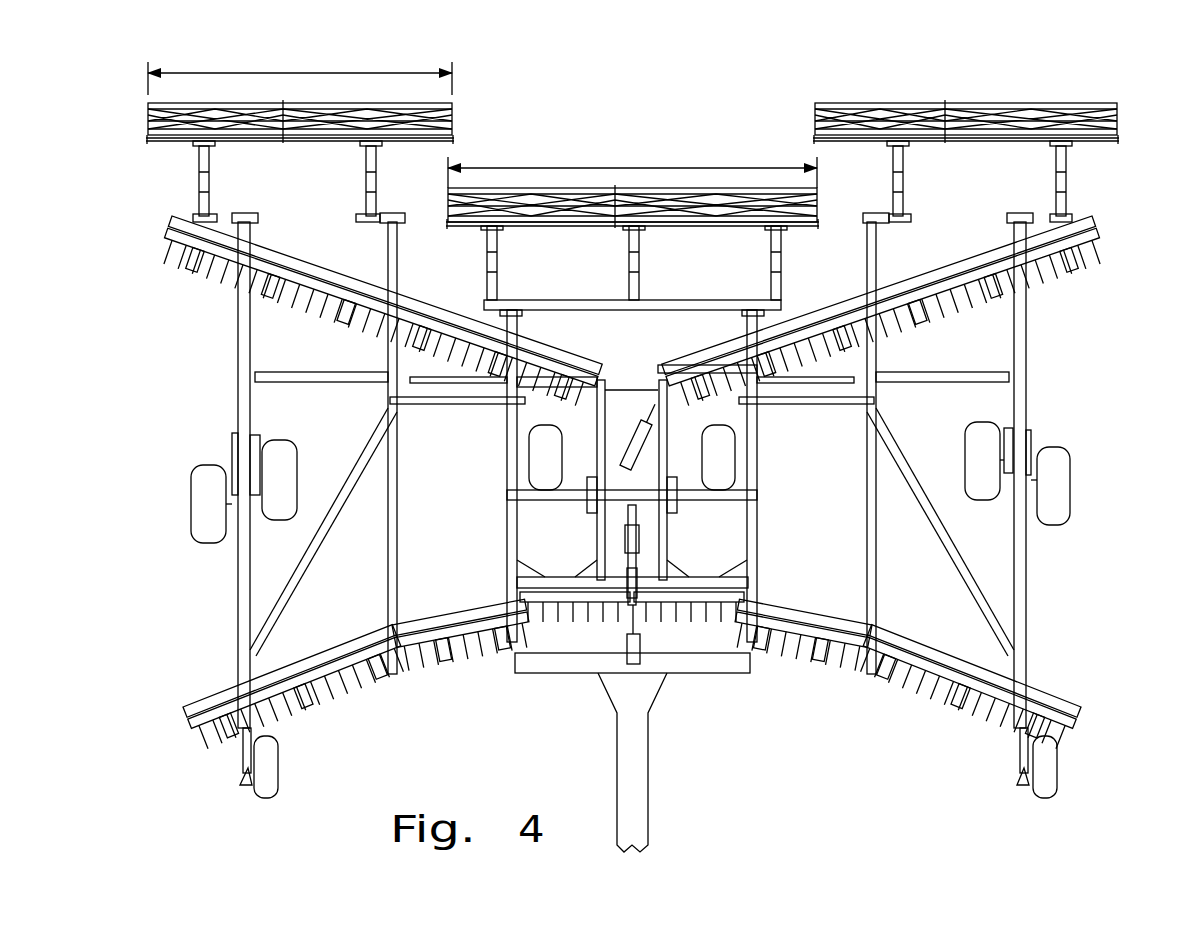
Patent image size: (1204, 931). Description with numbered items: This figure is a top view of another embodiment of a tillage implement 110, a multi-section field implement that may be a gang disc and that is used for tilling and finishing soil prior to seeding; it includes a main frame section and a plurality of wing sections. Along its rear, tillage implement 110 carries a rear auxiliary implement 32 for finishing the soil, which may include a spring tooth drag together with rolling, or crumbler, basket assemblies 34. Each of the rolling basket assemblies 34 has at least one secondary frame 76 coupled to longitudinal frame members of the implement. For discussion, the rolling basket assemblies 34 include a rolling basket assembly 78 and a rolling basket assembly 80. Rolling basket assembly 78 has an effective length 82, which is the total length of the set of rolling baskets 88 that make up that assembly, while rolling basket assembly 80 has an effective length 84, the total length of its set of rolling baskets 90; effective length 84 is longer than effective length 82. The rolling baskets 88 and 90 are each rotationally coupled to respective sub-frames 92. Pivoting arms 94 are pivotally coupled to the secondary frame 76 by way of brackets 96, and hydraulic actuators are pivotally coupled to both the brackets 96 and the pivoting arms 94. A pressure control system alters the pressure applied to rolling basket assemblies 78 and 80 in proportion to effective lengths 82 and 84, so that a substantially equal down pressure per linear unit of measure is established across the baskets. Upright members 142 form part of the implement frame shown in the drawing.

The rear auxiliary implement 32 is at (656, 170).
The rolling basket assemblies 34 is at (619, 142).
The secondary frame 76 is at (225, 218).
The rolling basket assembly 78 is at (619, 142).
The rolling basket assembly 80 is at (632, 171).
The effective length 82 is at (280, 73).
The effective length 84 is at (606, 168).
The rolling baskets 88 is at (343, 125).
The rolling baskets 90 is at (590, 210).
The sub-frames 92 is at (163, 140).
The pivoting arms 94 is at (603, 220).
The brackets 96 is at (200, 196).
The tillage implement 110 is at (631, 534).
The upright frame member 142 is at (243, 322).